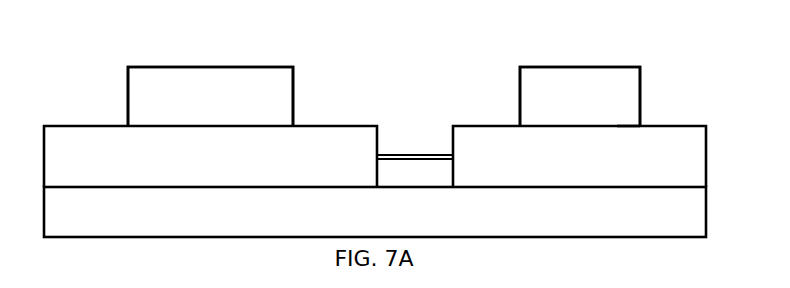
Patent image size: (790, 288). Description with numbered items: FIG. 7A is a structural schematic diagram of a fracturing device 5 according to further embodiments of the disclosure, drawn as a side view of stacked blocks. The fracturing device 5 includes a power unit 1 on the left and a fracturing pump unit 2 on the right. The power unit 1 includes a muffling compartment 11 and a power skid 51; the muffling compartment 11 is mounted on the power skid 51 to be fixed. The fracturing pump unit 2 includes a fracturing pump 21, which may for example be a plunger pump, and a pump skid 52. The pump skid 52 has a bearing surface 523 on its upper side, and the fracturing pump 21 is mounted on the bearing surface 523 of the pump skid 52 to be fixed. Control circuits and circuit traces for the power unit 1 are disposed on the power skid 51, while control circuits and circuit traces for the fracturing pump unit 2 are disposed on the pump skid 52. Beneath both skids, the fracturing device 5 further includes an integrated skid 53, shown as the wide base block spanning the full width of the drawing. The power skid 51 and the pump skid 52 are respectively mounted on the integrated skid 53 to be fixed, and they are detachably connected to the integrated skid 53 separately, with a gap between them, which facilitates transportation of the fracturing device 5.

The fracturing device 5 is at (366, 34).
The power unit 1 is at (100, 78).
The fracturing pump unit 2 is at (663, 87).
The muffling compartment 11 is at (210, 96).
The fracturing pump 21 is at (580, 96).
The power skid 51 is at (210, 156).
The pump skid 52 is at (579, 156).
The integrated skid 53 is at (375, 212).
The bearing surface 523 is at (617, 125).